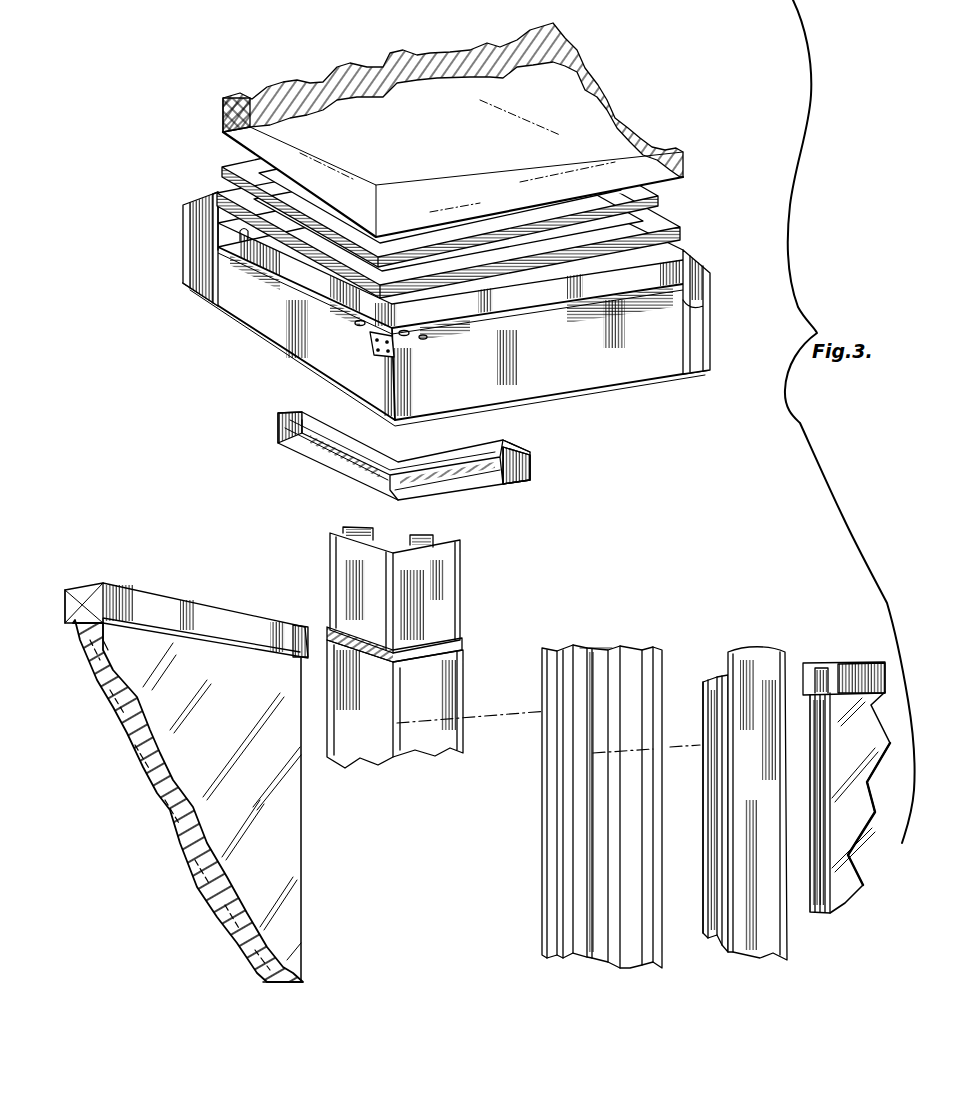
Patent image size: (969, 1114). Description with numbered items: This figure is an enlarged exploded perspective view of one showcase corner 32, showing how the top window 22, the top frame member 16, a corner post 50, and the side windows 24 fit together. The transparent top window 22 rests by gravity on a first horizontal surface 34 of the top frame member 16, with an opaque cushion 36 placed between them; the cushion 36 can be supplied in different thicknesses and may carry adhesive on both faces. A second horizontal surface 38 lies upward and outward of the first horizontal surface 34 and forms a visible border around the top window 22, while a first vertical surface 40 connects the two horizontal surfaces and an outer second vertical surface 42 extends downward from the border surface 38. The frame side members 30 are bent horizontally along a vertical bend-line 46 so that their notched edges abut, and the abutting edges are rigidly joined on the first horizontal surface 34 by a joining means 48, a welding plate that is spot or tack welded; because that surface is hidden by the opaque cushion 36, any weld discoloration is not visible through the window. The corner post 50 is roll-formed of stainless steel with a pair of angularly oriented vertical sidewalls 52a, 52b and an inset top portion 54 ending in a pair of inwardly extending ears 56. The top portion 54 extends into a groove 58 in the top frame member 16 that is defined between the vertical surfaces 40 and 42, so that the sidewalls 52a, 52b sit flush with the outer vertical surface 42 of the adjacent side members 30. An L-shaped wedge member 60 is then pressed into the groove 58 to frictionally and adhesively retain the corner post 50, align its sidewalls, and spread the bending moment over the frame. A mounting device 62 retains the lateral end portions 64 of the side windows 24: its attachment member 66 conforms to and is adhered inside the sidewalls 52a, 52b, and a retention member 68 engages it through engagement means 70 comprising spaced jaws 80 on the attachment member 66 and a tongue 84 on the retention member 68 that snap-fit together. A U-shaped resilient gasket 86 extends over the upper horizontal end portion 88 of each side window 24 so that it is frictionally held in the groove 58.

The top frame member 16 is at (702, 266).
The top window 22 is at (583, 68).
The side windows 24 is at (846, 902).
The frame side members 30 is at (272, 344).
The showcase corners 32 is at (533, 630).
The first horizontal surface 34 is at (243, 232).
The cushion 36 is at (225, 167).
The second horizontal surface 38 is at (202, 198).
The first vertical surface 40 is at (186, 207).
The second vertical surface 42 is at (216, 222).
The bend-line 46 is at (397, 395).
The joining means 48 is at (365, 355).
The corner post 50 is at (318, 530).
The vertical sidewall 52a is at (445, 680).
The vertical sidewall 52b is at (343, 737).
The inset top portion 54 is at (463, 587).
The ears 56 is at (443, 535).
The groove 58 is at (692, 284).
The wedge member 60 is at (527, 470).
The mounting device 62 is at (703, 970).
The lateral end portions 64 is at (845, 725).
The attachment member 66 is at (546, 870).
The retention member 68 is at (750, 662).
The engagement means 70 is at (692, 658).
The jaws 80 is at (612, 657).
The tongue 84 is at (710, 682).
The gasket 86 is at (844, 664).
The upper horizontal end portion 88 is at (137, 635).